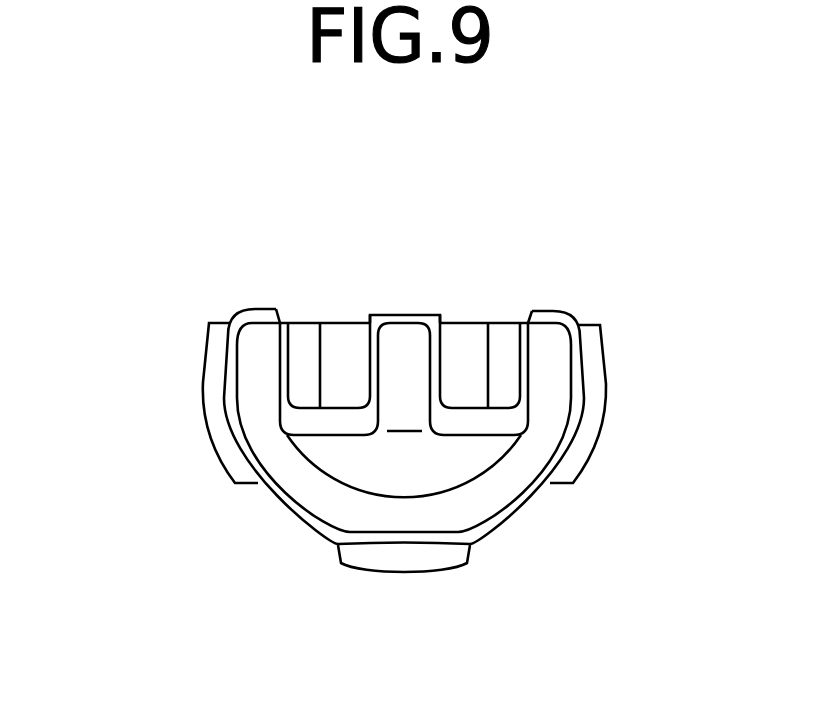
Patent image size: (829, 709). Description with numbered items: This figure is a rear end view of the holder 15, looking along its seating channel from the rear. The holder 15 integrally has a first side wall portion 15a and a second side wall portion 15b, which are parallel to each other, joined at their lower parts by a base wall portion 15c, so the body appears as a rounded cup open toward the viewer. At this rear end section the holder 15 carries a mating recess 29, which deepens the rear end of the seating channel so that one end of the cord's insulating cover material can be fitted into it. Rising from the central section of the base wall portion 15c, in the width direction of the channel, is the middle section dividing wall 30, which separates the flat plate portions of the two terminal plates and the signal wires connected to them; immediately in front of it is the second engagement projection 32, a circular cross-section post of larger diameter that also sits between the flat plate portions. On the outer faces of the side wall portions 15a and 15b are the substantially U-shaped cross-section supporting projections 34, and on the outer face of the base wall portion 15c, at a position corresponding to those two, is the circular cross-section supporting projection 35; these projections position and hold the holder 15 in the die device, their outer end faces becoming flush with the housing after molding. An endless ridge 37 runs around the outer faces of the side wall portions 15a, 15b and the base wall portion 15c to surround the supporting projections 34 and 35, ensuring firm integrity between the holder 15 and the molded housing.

The holder 15 is at (495, 542).
The first side wall portion 15a is at (234, 414).
The second side wall portion 15b is at (577, 413).
The base wall portion 15c is at (462, 408).
The mating recess 29 is at (358, 479).
The middle section dividing wall 30 is at (391, 340).
The second engagement projection 32 is at (430, 315).
The supporting projection 34 is at (210, 377).
The supporting projection 35 is at (407, 568).
The endless ridge 37 is at (553, 312).